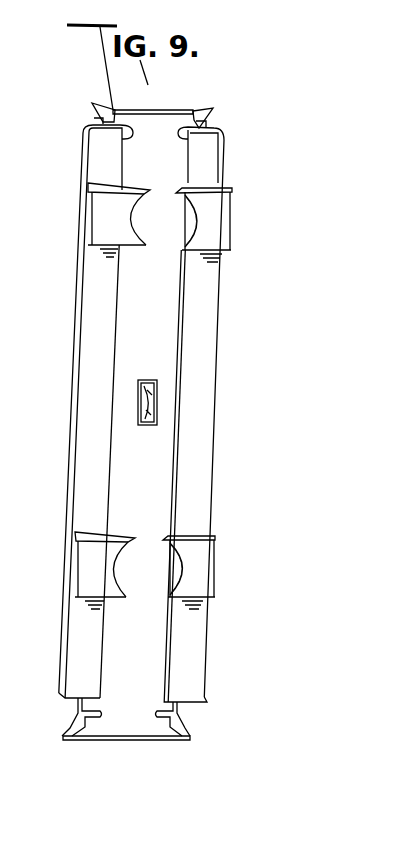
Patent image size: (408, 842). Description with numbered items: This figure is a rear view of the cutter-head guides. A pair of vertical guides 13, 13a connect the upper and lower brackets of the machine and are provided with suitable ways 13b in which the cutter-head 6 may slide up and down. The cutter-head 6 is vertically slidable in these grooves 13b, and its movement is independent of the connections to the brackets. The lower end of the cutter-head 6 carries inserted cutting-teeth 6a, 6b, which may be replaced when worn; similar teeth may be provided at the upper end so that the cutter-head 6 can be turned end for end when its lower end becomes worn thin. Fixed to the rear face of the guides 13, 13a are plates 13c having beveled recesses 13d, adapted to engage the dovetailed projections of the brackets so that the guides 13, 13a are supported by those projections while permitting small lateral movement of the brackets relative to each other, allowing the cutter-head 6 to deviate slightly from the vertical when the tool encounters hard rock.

The cutter-head 6 is at (126, 700).
The inserted cutting-tooth 6a is at (72, 740).
The inserted cutting-tooth 6b is at (140, 403).
The vertical guide 13 is at (87, 365).
The vertical guide 13a is at (212, 376).
The ways 13b is at (200, 123).
The plate 13c is at (218, 203).
The beveled recess 13d is at (188, 237).